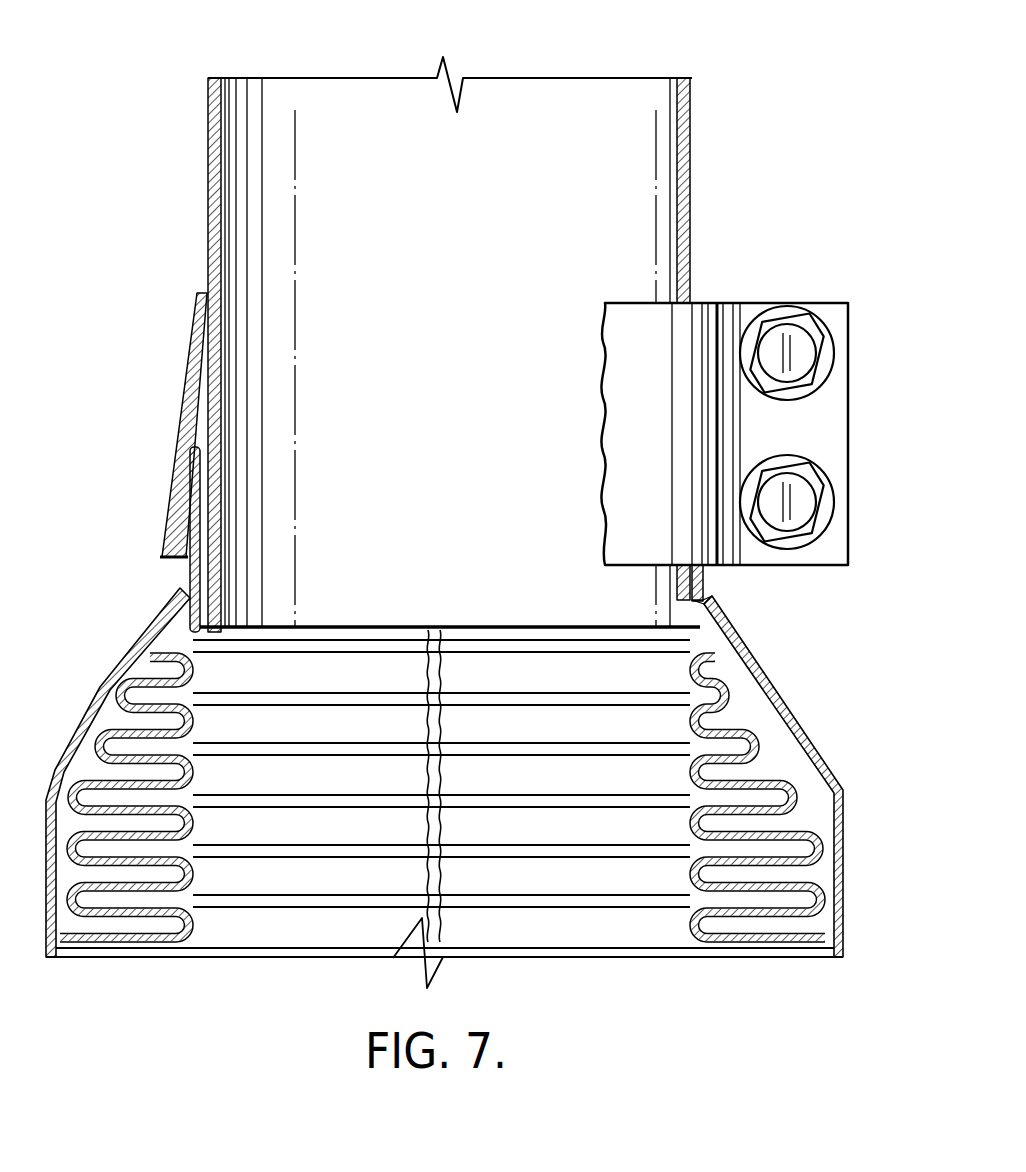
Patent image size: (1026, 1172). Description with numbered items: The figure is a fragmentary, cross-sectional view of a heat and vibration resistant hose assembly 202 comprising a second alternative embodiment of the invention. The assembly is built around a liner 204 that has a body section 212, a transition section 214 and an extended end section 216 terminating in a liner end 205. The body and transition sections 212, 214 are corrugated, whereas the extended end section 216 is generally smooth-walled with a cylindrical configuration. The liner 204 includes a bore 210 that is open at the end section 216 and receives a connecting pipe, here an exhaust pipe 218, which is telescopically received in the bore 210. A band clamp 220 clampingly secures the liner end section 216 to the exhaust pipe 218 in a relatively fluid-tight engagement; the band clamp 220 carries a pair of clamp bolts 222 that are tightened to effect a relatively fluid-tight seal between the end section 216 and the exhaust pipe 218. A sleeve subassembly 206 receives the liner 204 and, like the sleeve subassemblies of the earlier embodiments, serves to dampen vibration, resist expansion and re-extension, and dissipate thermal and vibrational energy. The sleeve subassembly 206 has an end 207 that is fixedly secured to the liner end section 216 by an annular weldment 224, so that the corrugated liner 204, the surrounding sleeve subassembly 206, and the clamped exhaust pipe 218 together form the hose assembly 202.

The heat and vibration resistant hose assembly 202 is at (180, 120).
The liner 204 is at (821, 965).
The liner end 205 is at (185, 423).
The sleeve subassembly 206 is at (44, 959).
The end 207 is at (712, 600).
The bore 210 is at (195, 815).
The body section 212 is at (195, 925).
The transition section 214 is at (200, 666).
The extended end section 216 is at (222, 541).
The exhaust pipe 218 is at (692, 78).
The band clamp 220 is at (850, 303).
The clamp bolts 222 is at (790, 462).
The annular weldment 224 is at (178, 596).